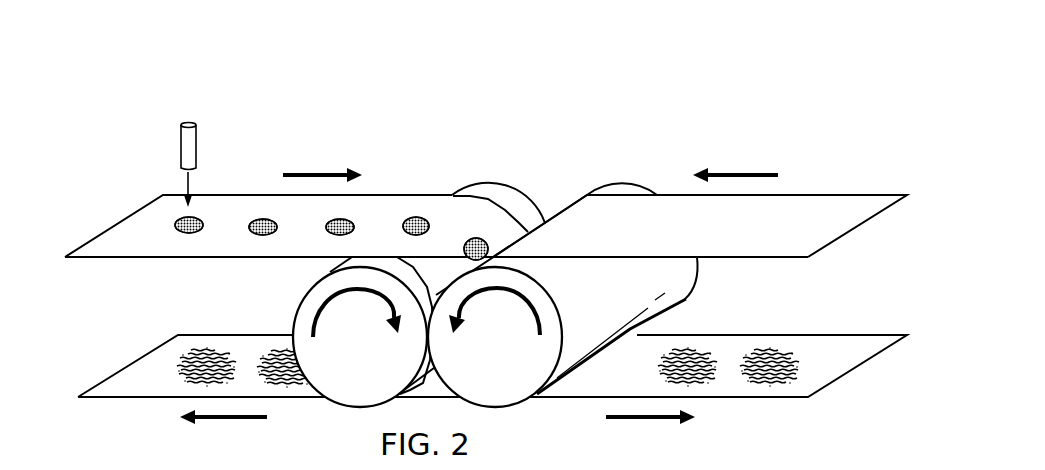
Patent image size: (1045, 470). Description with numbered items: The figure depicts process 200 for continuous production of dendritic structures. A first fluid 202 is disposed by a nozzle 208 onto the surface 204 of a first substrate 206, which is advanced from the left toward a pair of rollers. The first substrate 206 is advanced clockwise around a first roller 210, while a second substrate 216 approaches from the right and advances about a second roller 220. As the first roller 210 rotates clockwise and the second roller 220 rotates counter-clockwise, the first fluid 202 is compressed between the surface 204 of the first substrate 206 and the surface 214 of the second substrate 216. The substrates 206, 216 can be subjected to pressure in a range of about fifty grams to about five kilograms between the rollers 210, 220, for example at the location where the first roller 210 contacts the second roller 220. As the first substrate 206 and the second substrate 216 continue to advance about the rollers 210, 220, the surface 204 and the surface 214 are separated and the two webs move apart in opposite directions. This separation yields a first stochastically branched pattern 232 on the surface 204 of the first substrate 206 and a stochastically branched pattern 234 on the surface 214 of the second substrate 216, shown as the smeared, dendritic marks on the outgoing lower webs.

The process 200 is at (304, 78).
The first fluid 202 is at (173, 227).
The surface 204 is at (252, 207).
The first substrate 206 is at (117, 257).
The nozzle 208 is at (181, 142).
The first roller 210 is at (303, 305).
The surface 214 is at (772, 238).
The second substrate 216 is at (830, 195).
The second roller 220 is at (686, 297).
The first stochastically branched pattern 232 is at (208, 347).
The stochastically branched pattern 234 is at (760, 348).